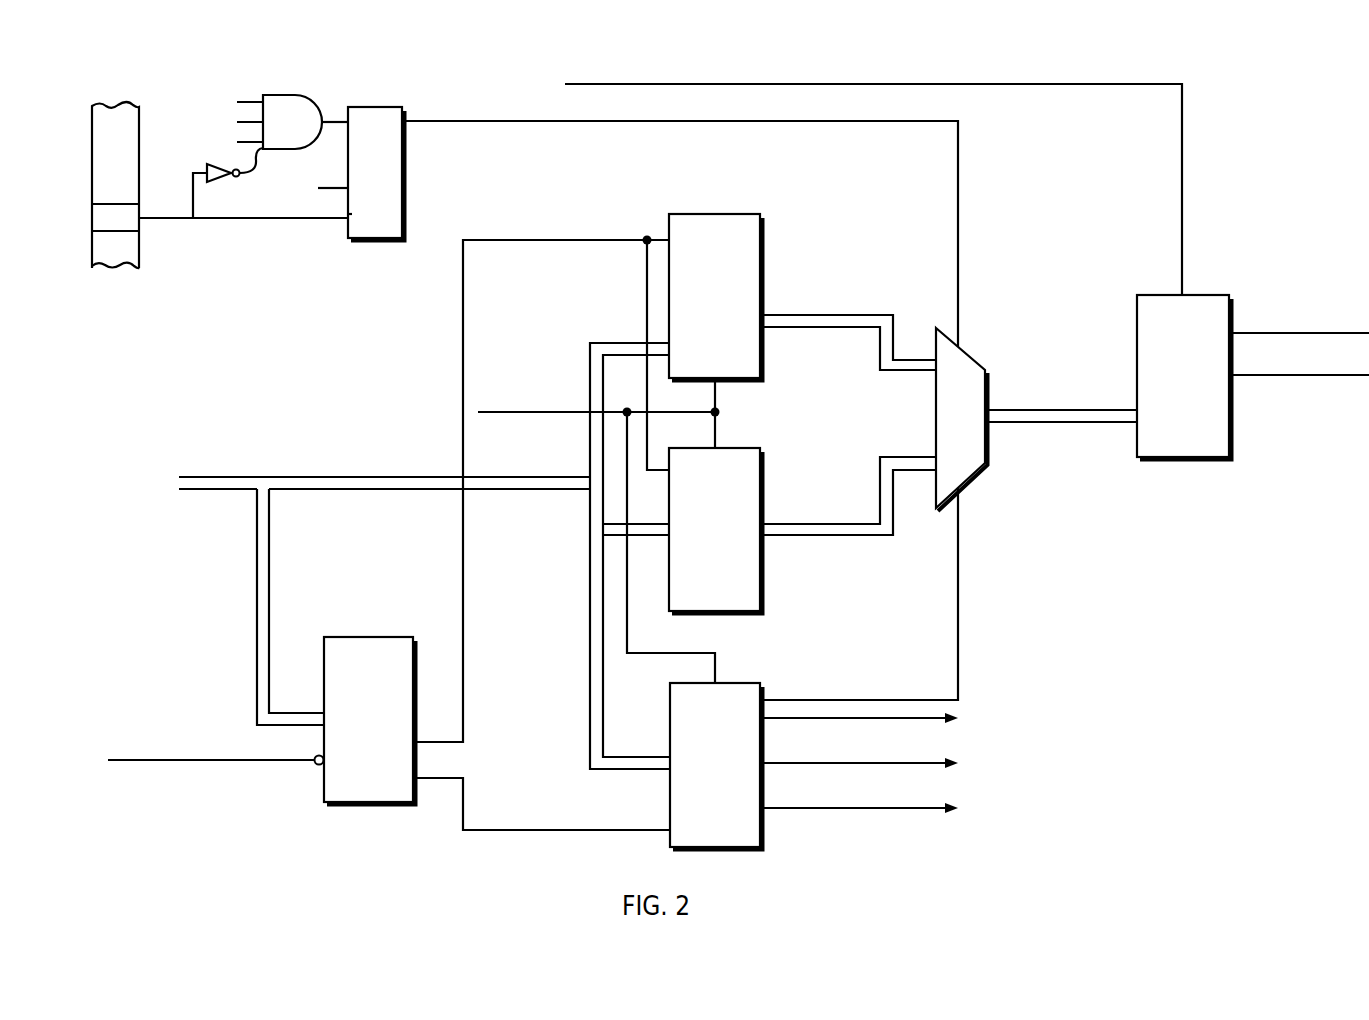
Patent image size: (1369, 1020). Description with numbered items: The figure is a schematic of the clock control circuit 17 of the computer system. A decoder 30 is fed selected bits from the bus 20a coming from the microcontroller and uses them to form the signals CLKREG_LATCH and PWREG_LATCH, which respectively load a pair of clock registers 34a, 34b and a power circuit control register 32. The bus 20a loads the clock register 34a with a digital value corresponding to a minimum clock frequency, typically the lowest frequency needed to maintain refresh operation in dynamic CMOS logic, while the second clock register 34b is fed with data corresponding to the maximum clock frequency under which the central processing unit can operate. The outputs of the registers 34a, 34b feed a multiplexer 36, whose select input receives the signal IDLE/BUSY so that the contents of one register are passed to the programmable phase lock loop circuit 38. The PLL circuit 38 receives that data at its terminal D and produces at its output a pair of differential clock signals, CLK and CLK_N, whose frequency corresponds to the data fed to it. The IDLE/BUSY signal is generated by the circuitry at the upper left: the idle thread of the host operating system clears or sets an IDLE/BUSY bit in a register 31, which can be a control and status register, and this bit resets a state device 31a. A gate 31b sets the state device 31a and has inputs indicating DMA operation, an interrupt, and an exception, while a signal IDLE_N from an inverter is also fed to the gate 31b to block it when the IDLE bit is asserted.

The clock control circuit 17 is at (789, 880).
The bus 20a is at (212, 477).
The decoder 30 is at (340, 637).
The register 31 is at (92, 152).
The state device 31a is at (380, 241).
The gate 31b is at (374, 107).
The power circuit control register 32 is at (737, 683).
The clock register 34a is at (762, 470).
The clock register 34b is at (762, 254).
The multiplexer 36 is at (975, 365).
The programmable phase lock loop circuit 38 is at (1155, 295).